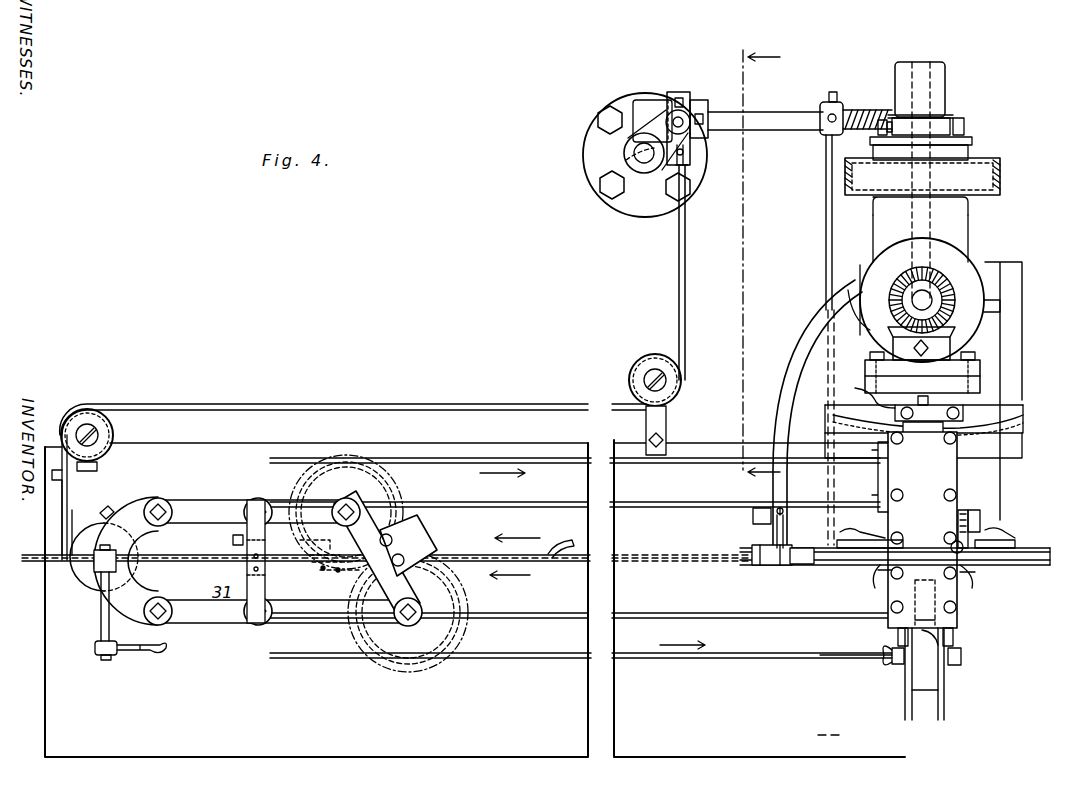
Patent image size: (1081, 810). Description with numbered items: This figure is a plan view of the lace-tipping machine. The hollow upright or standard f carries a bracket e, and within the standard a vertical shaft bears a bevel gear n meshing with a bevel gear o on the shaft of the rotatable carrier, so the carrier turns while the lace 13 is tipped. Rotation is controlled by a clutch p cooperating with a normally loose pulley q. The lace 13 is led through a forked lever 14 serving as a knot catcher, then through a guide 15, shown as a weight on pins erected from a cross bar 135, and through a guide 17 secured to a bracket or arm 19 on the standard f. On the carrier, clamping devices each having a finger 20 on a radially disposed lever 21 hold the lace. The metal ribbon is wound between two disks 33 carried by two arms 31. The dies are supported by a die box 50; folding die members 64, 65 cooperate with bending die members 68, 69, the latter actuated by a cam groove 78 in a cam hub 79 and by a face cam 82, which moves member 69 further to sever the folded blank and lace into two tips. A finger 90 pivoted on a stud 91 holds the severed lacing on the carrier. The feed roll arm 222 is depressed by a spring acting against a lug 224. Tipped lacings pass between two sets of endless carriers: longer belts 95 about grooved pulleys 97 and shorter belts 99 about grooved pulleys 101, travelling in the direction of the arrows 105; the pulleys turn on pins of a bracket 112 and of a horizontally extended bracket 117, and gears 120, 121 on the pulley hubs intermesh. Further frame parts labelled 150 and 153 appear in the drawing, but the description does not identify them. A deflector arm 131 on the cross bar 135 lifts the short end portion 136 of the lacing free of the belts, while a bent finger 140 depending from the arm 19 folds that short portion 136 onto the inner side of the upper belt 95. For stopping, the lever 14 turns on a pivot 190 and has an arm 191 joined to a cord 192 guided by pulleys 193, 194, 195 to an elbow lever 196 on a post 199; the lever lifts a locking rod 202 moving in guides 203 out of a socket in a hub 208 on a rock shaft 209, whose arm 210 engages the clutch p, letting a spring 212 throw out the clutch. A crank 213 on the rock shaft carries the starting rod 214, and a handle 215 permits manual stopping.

The lace 13 is at (210, 565).
The forked lever 14 is at (66, 555).
The guide 15 is at (250, 573).
The guide 17 is at (803, 548).
The bracket or arm 19 is at (786, 384).
The finger 20 is at (1020, 557).
The lever 21 is at (862, 532).
The arms 31 is at (950, 640).
The disks 33 is at (944, 693).
The die block or box 50 is at (957, 488).
The folding die member 64 is at (1040, 566).
The folding die member 65 is at (882, 588).
The bending die member 68 is at (964, 408).
The bending die member 69 is at (836, 412).
The cam groove 78 is at (848, 428).
The cam hub 79 is at (841, 458).
The face cam 82 is at (866, 392).
The finger 90 is at (950, 546).
The stud or screw 91 is at (982, 520).
The belt 95 is at (465, 460).
The grooved pulley 97 is at (318, 473).
The belt 99 is at (552, 663).
The grooved pulley 101 is at (388, 640).
The arrows 105 is at (592, 559).
The bracket 112 is at (1012, 398).
The horizontally extended bracket 117 is at (128, 532).
The gear 120 is at (285, 493).
The gear 121 is at (392, 676).
The deflector finger or arm 131 is at (290, 566).
The cross bar 135 is at (233, 542).
The short end portion 136 is at (572, 537).
The bent finger or arm 140 is at (800, 562).
The rod 150 is at (730, 622).
The frame 153 is at (742, 500).
The pivot 190 is at (101, 638).
The arm 191 is at (92, 592).
The cord, chain or flexible device 192 is at (176, 410).
The pulley 193 is at (70, 520).
The pulley 194 is at (100, 455).
The pulley 195 is at (632, 372).
The elbow lever 196 is at (690, 158).
The upright or post 199 is at (636, 154).
The rod 202 is at (672, 122).
The guides 203 is at (628, 144).
The hub 208 is at (705, 112).
The rock shaft 209 is at (785, 135).
The arm 210 is at (964, 124).
The spring 212 is at (860, 105).
The crank or arm 213 is at (822, 108).
The starting rod 214 is at (826, 220).
The handle 215 is at (150, 652).
The arm 222 is at (950, 600).
The lug 224 is at (961, 655).
The clutch p is at (945, 120).
The pulley q is at (985, 160).
The hollow upright or standard f is at (872, 272).
The bevel gear n is at (938, 282).
The bevel gear o is at (948, 333).
The bracket e is at (964, 372).